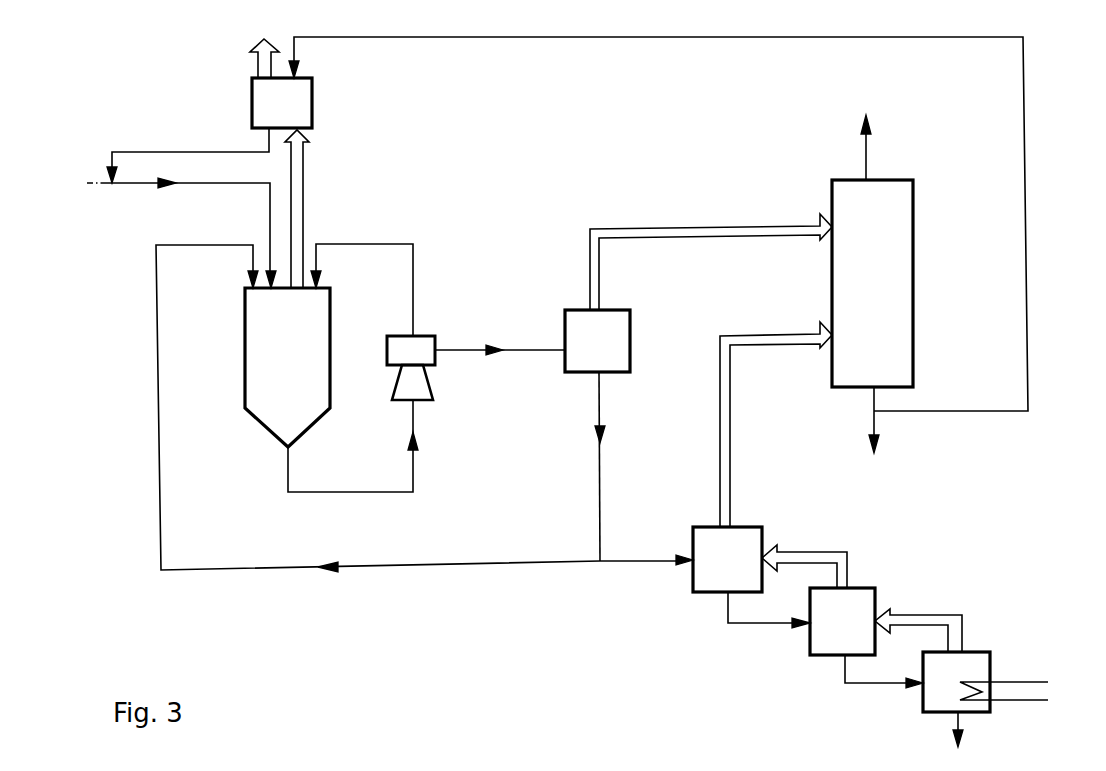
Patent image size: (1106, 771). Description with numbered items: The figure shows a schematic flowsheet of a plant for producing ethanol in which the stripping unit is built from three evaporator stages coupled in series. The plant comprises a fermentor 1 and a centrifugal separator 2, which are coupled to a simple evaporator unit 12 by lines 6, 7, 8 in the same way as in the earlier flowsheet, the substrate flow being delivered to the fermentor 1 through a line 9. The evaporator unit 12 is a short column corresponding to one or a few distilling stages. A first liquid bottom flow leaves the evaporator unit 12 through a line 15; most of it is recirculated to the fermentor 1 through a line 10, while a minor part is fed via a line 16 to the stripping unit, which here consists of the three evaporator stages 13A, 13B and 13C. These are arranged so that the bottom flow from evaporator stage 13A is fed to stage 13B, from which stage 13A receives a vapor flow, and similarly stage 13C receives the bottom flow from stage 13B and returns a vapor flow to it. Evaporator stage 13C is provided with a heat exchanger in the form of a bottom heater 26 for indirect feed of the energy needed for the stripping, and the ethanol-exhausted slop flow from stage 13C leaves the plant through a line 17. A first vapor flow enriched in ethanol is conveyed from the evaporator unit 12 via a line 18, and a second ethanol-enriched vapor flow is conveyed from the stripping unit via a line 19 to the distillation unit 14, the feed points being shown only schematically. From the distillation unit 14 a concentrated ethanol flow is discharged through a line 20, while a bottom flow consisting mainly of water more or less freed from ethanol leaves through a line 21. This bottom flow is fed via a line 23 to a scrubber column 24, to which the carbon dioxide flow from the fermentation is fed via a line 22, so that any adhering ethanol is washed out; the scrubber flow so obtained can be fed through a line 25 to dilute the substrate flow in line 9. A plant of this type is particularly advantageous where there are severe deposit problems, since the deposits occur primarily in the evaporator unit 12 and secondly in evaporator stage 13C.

The fermentor 1 is at (298, 340).
The centrifugal separator 2 is at (417, 351).
The recycle line 6 is at (350, 492).
The feed line 7 is at (350, 243).
The outlet line 8 is at (535, 348).
The line 9 is at (213, 185).
The line 10 is at (373, 572).
The evaporator unit 12 is at (608, 349).
The evaporator stage 13A is at (743, 547).
The evaporator stage 13B is at (853, 612).
The evaporator stage 13C is at (963, 668).
The distillation unit 14 is at (887, 290).
The line 15 is at (602, 467).
The line 16 is at (665, 562).
The line 17 is at (968, 725).
The line 18 is at (730, 225).
The line 19 is at (730, 420).
The line 20 is at (867, 150).
The line 21 is at (877, 425).
The line 22 is at (303, 195).
The line 23 is at (1028, 217).
The scrubber column 24 is at (293, 108).
The line 25 is at (155, 150).
The bottom heater 26 is at (1025, 680).